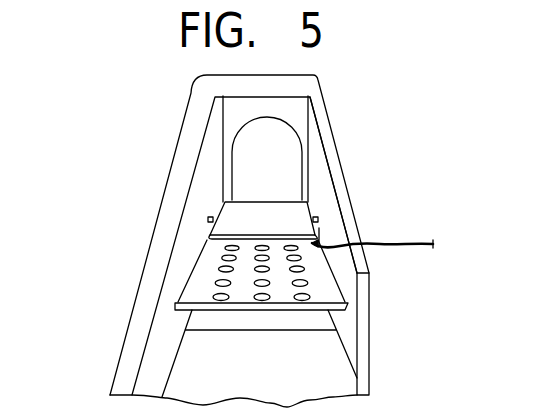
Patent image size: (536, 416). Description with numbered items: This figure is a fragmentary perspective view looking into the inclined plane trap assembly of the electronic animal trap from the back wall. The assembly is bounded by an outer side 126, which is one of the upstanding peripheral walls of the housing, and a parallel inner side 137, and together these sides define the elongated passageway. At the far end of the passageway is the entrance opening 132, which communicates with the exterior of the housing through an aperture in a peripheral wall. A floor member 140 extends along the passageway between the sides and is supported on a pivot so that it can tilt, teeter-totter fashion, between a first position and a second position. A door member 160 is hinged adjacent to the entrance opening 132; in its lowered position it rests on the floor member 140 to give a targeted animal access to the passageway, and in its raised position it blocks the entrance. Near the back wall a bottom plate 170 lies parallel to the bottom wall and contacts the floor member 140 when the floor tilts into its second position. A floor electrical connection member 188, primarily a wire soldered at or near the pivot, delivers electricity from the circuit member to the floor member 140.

The outer side 126 is at (154, 232).
The entrance opening 132 is at (287, 163).
The inner side 137 is at (324, 175).
The floor member 140 is at (335, 296).
The door member 160 is at (227, 215).
The bottom plate 170 is at (193, 362).
The floor electrical connection member 188 is at (398, 243).